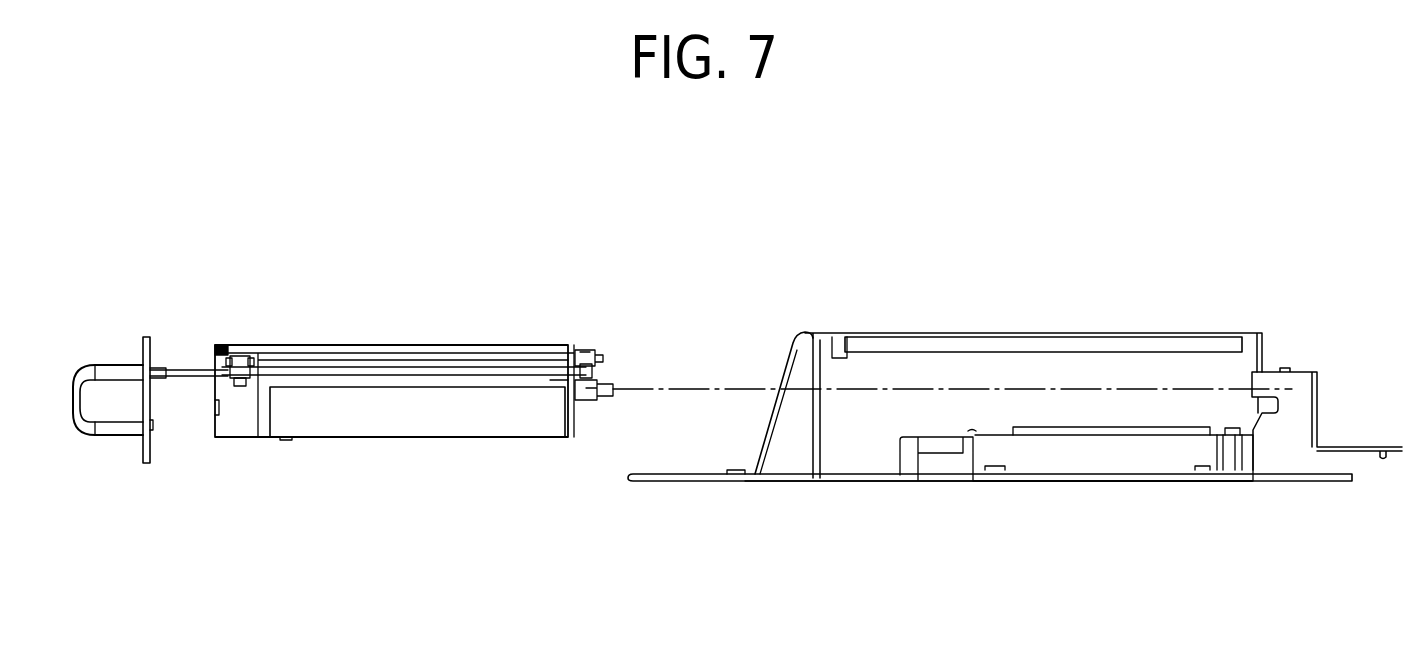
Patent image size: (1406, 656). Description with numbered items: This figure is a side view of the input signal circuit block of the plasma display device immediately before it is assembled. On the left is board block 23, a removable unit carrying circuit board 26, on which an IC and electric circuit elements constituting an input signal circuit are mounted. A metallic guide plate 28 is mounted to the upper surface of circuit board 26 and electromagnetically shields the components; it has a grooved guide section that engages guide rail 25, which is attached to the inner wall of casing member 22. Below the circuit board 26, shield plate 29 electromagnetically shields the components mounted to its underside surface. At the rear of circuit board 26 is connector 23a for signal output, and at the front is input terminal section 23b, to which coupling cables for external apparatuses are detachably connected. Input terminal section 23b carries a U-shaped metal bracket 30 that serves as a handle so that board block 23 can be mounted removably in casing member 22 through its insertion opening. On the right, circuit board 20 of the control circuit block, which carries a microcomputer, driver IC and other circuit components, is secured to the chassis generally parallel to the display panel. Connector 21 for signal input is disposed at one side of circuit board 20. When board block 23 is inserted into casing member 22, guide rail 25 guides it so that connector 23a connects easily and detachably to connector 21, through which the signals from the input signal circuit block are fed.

The circuit board 20 is at (1263, 482).
The connector 21 is at (1283, 447).
The casing member 22 is at (870, 337).
The board block 23 is at (390, 347).
The connector 23a is at (592, 404).
The input terminal section 23b is at (150, 340).
The guide rail 25 is at (998, 352).
The circuit board 26 is at (583, 355).
The metallic guide plate 28 is at (518, 348).
The shield plate 29 is at (508, 424).
The U-shaped metal bracket 30 is at (107, 370).